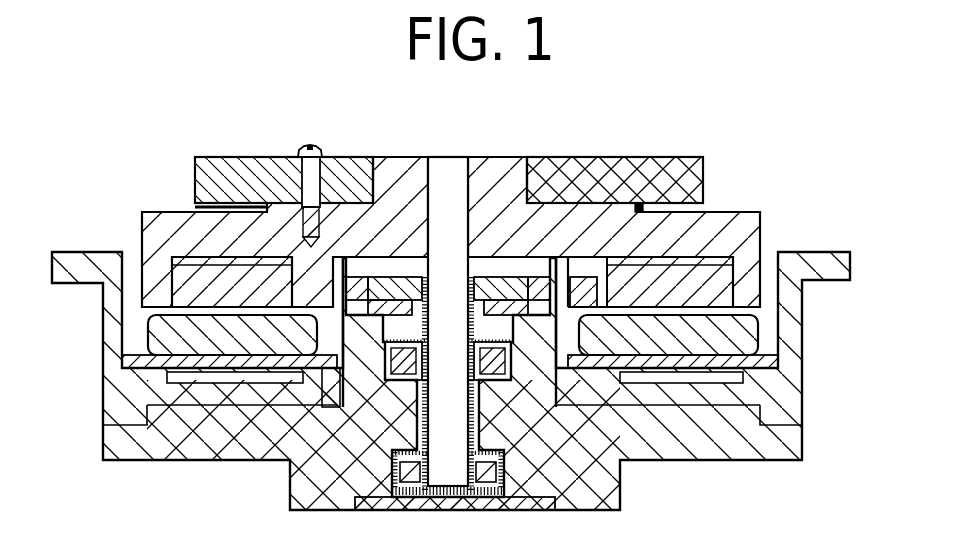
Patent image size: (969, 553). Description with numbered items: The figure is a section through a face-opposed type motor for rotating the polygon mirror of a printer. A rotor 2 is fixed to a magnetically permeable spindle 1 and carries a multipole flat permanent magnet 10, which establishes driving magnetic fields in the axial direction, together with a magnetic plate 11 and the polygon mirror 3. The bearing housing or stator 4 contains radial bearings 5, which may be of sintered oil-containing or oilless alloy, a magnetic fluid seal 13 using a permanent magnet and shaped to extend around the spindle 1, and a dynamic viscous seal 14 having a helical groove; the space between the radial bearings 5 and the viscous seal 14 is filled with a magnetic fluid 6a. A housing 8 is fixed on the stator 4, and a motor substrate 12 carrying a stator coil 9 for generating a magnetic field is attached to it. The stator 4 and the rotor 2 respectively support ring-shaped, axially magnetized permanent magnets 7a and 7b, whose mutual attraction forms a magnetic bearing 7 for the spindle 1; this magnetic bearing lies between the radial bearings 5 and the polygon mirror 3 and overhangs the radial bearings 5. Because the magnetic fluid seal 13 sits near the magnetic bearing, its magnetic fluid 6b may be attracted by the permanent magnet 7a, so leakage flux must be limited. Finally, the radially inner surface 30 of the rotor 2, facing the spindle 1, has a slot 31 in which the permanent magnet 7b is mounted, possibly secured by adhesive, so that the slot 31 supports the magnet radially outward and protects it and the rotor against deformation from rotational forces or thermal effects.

The spindle 1 is at (440, 167).
The rotor 2 is at (145, 225).
The polygon mirror 3 is at (207, 165).
The bearing housing 4 is at (133, 445).
The radial bearings 5 is at (537, 510).
The magnetic fluid 6a is at (420, 410).
The magnetic fluid 6b is at (420, 280).
The magnetic bearing 7 is at (235, 405).
The permanent magnet 7a is at (541, 280).
The permanent magnet 7b is at (598, 280).
The housing 8 is at (112, 333).
The stator coil 9 is at (743, 330).
The permanent magnet 10 is at (762, 235).
The magnetic plate 11 is at (715, 258).
The motor substrate 12 is at (667, 365).
The magnetic fluid seal 13 is at (503, 355).
The dynamic viscous seal 14 is at (256, 158).
The radially inner surface 30 is at (583, 283).
The slot 31 is at (645, 266).